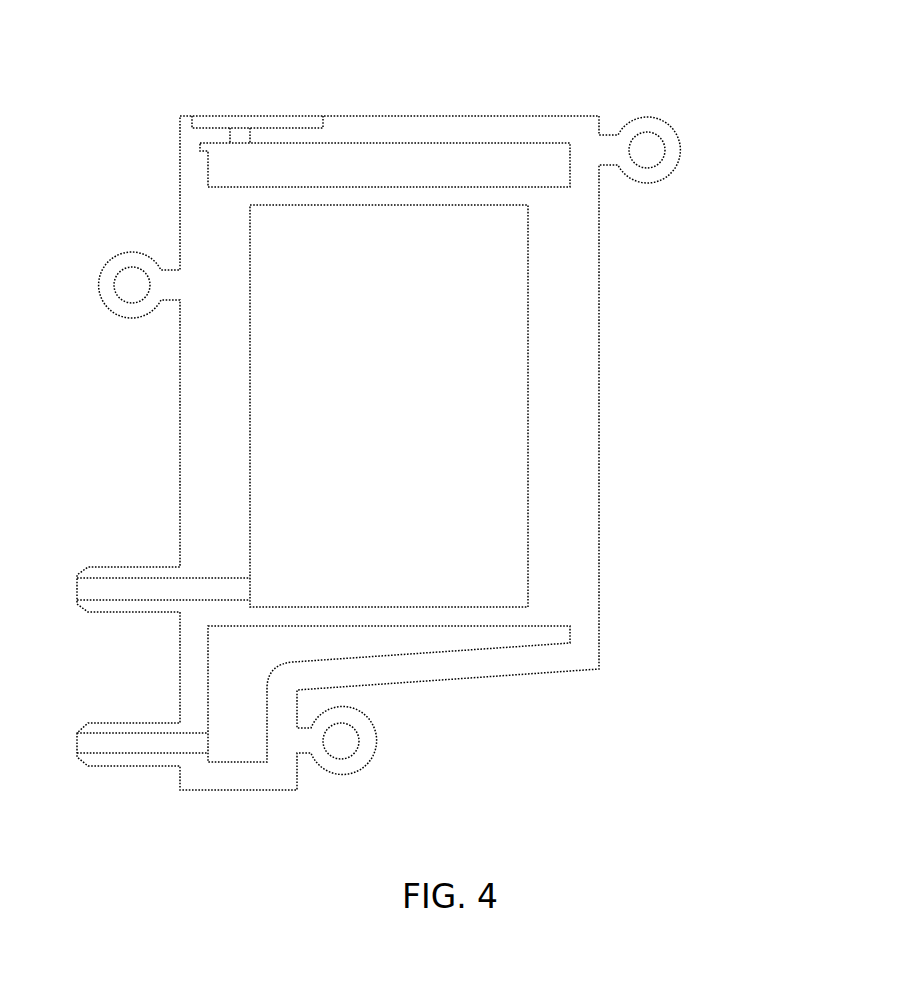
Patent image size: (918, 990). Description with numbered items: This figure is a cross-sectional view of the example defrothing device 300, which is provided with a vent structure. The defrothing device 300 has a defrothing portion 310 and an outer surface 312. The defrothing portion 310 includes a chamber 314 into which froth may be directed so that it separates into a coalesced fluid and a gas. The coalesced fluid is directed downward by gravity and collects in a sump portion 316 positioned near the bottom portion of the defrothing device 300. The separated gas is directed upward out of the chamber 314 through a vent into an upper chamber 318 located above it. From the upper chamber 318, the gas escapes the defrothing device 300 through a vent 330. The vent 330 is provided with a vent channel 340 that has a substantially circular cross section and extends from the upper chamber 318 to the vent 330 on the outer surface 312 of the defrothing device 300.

The defrothing device 300 is at (442, 427).
The defrothing portion 310 is at (195, 416).
The outer surface 312 is at (517, 116).
The chamber 314 is at (463, 396).
The sump portion 316 is at (237, 730).
The upper chamber 318 is at (508, 175).
The vent 330 is at (300, 116).
The vent channel 340 is at (231, 140).